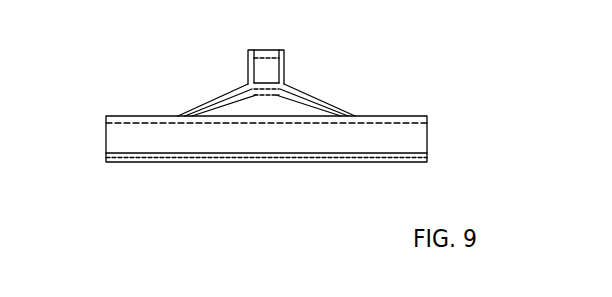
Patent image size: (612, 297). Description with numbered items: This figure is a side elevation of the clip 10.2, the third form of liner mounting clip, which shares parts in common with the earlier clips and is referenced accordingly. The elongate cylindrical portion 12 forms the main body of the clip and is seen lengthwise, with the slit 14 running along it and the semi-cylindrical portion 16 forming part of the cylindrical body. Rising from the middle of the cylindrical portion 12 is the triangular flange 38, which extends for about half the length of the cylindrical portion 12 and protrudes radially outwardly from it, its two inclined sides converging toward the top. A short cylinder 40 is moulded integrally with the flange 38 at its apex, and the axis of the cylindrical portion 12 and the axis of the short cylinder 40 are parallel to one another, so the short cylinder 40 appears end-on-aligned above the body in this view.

The clip 10.2 is at (430, 47).
The cylindrical portion 12 is at (257, 157).
The slit 14 is at (434, 167).
The semi-cylindrical portion 16 is at (378, 140).
The triangular flange 38 is at (336, 95).
The short cylinder 40 is at (291, 47).